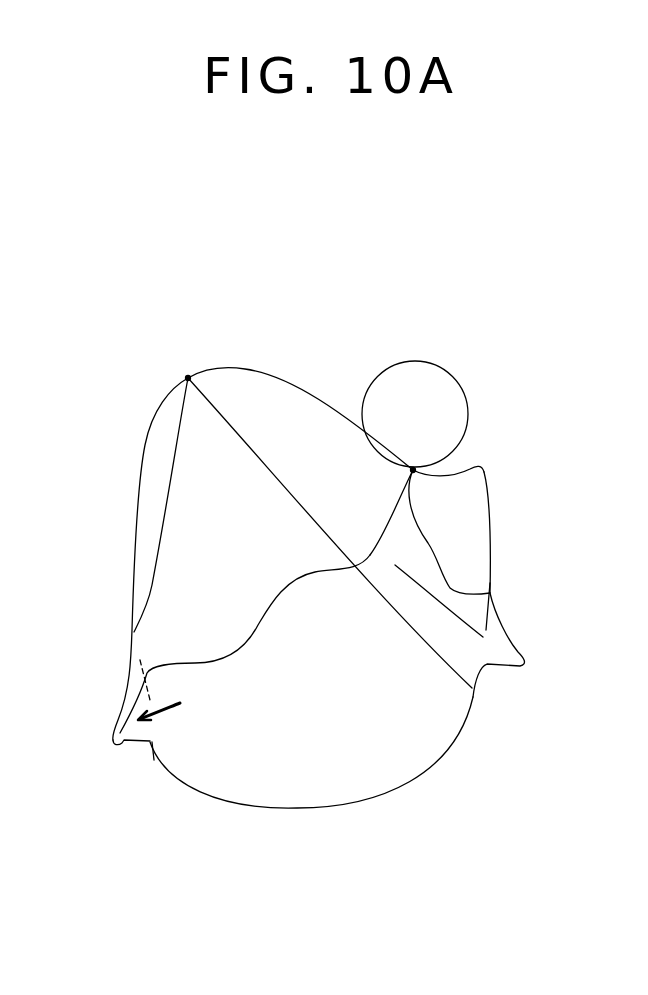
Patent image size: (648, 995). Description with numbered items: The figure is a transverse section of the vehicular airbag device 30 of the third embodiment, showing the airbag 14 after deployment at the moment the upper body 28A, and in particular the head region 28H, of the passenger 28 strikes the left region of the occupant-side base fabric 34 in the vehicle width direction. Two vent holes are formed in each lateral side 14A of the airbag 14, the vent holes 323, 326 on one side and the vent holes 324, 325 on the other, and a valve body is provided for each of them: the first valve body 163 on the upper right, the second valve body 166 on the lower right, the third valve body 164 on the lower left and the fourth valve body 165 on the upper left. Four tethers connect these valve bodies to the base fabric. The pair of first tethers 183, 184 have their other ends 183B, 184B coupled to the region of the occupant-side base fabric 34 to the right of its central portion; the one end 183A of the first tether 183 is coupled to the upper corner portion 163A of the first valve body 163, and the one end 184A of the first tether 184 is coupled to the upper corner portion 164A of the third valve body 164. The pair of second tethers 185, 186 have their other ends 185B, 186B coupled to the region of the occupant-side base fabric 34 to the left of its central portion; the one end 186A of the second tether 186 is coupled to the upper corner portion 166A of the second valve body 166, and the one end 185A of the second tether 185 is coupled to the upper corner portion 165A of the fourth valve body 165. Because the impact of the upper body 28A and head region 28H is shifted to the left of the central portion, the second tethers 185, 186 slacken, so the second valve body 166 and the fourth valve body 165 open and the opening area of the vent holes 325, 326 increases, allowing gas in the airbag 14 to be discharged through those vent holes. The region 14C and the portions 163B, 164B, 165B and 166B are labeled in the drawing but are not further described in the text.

The vehicular airbag device 30 is at (293, 307).
The airbag 14 is at (225, 368).
The occupant-side base fabric 34 is at (297, 382).
The lateral side 14A is at (134, 556).
The inflation region of airbag 14C is at (132, 601).
The passenger 28 is at (466, 388).
The upper body 28A is at (429, 378).
The head region 28H is at (417, 360).
The first tether 183 is at (168, 522).
The first tether 184 is at (284, 472).
The second tether 185 is at (458, 577).
The second tether 186 is at (393, 510).
The one end of first tether 183A is at (132, 628).
The other end of first tether 183B is at (186, 377).
The one end of first tether 184A is at (467, 733).
The other end of first tether 184B is at (188, 378).
The one end of second tether 185A is at (520, 666).
The other end of second tether 185B is at (445, 476).
The one end of second tether 186A is at (131, 741).
The other end of second tether 186B is at (413, 470).
The first valve body 163 is at (131, 656).
The upper corner portion of first valve body 163A is at (136, 628).
The end of partition 163 163B is at (139, 663).
The third valve body 164 is at (453, 743).
The upper corner portion of third valve body 164A is at (470, 700).
The end of partition 164 164B is at (458, 755).
The fourth valve body 165 is at (483, 666).
The upper corner portion of fourth valve body 165A is at (486, 660).
The end of partition 165 165B is at (472, 700).
The second valve body 166 is at (147, 746).
The upper corner portion of second valve body 166A is at (114, 734).
The end of partition 166 166B is at (155, 741).
The vent hole 323 is at (138, 644).
The vent hole 324 is at (466, 700).
The vent hole 325 is at (427, 574).
The vent hole 326 is at (143, 723).